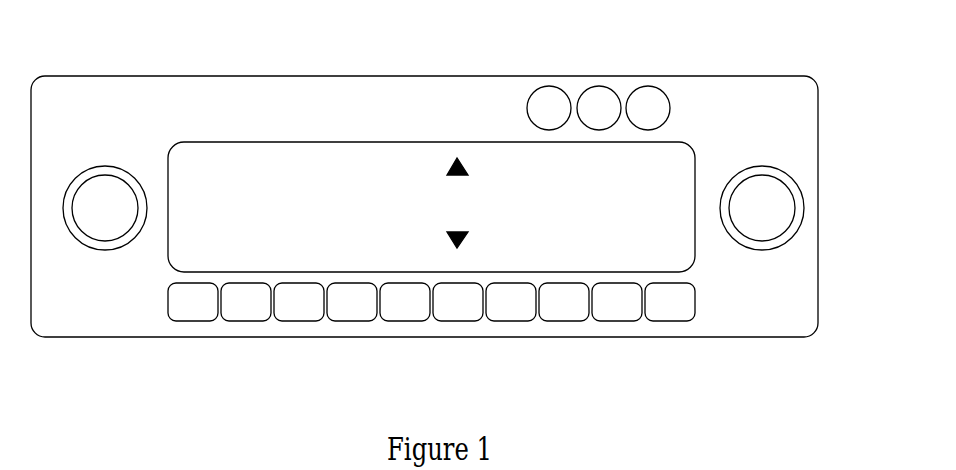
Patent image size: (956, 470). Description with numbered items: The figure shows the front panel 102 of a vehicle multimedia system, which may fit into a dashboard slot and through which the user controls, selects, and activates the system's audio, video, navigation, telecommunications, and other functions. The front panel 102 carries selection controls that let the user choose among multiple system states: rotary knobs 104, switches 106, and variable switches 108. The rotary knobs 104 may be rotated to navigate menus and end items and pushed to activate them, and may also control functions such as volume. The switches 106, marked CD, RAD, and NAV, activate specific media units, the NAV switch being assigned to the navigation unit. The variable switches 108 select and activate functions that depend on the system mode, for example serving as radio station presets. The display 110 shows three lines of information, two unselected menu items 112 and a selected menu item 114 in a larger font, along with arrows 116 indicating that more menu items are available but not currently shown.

The front panel 102 is at (90, 67).
The rotary knobs 104 is at (102, 156).
The switches 106 is at (675, 85).
The variable switches 108 is at (703, 328).
The display 110 is at (410, 131).
The unselected menu items 112 is at (215, 148).
The selected menu item 114 is at (190, 190).
The arrows 116 is at (489, 182).